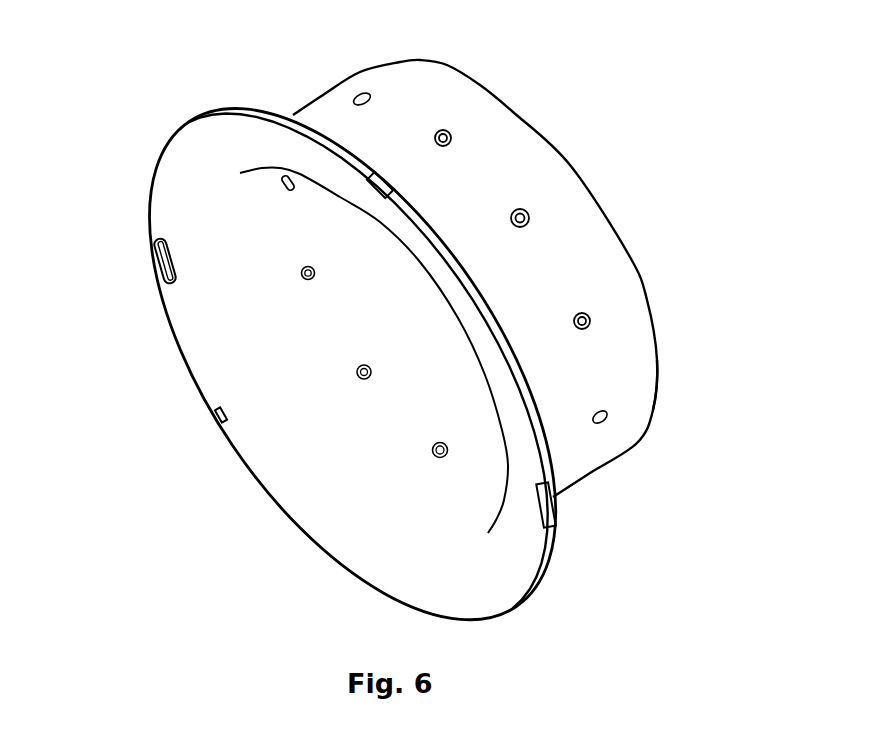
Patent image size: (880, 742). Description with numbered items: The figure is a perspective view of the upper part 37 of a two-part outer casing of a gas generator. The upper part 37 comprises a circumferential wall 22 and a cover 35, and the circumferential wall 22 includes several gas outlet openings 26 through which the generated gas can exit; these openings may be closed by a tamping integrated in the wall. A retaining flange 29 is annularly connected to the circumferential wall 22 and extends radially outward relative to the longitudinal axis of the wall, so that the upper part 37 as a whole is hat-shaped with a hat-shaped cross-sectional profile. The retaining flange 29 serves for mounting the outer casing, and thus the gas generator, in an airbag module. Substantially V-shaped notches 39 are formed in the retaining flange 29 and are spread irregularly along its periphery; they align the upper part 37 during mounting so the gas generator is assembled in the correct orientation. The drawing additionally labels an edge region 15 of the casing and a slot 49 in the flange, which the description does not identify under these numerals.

The upper part 37 is at (636, 151).
The circumferential wall 22 is at (613, 370).
The gas outlet openings 26 is at (530, 220).
The peripheral edge 15 is at (632, 394).
The cover 35 is at (552, 500).
The notches 39 is at (380, 173).
The retaining flange 29 is at (530, 540).
The slot 49 is at (151, 273).